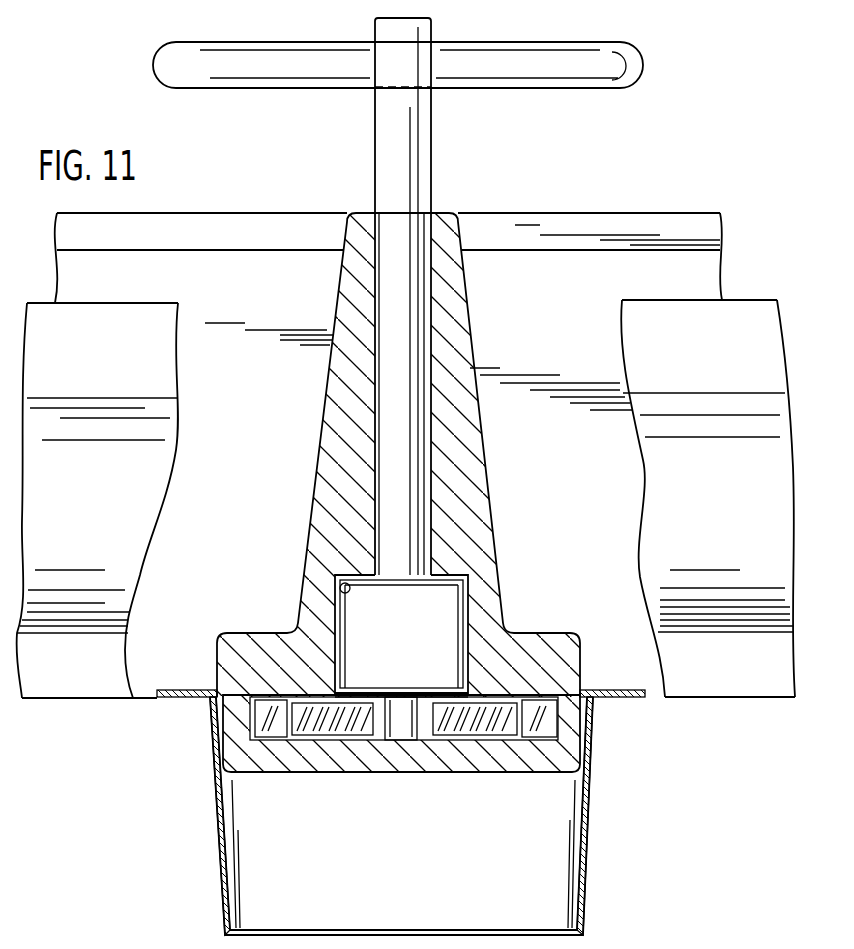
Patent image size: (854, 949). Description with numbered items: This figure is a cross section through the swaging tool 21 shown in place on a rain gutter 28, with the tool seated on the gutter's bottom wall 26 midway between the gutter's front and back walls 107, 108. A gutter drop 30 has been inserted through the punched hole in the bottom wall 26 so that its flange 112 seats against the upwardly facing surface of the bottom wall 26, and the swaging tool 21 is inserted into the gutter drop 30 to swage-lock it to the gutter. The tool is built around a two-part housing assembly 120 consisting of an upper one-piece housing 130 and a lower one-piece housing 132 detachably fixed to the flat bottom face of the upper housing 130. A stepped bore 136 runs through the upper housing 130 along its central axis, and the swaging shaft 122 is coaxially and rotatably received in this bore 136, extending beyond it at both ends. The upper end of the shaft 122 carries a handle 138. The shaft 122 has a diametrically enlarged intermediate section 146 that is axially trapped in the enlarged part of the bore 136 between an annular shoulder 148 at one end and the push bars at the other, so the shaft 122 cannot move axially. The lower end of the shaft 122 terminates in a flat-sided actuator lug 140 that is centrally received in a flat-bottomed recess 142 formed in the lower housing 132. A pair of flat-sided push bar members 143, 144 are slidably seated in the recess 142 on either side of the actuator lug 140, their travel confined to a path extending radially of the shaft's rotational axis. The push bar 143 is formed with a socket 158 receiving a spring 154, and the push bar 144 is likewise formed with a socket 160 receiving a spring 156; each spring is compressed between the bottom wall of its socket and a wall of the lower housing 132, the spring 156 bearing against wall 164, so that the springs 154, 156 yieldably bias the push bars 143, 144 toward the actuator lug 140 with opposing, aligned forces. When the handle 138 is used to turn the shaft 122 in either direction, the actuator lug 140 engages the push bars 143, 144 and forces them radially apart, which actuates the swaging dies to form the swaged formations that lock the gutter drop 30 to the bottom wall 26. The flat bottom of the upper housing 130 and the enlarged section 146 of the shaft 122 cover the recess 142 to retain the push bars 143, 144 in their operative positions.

The swaging tool 21 is at (350, 150).
The bottom wall 26 is at (667, 697).
The rain gutter 28 is at (735, 270).
The gutter drop 30 is at (597, 818).
The front wall 107 is at (743, 341).
The back wall 108 is at (570, 297).
The flange 112 is at (622, 690).
The housing assembly 120 is at (490, 400).
The swaging shaft 122 is at (433, 160).
The upper housing 130 is at (474, 345).
The lower housing 132 is at (580, 746).
The stepped bore 136 is at (380, 368).
The handle 138 is at (620, 52).
The actuator lug 140 is at (398, 740).
The recess 142 is at (250, 723).
The push bar member 143 is at (365, 693).
The push bar member 144 is at (447, 697).
The enlarged intermediate section 146 is at (345, 606).
The shoulder 148 is at (345, 582).
The spring 154 is at (268, 720).
The spring 156 is at (535, 730).
The socket 158 is at (340, 730).
The socket 160 is at (273, 733).
The wall 164 is at (540, 697).